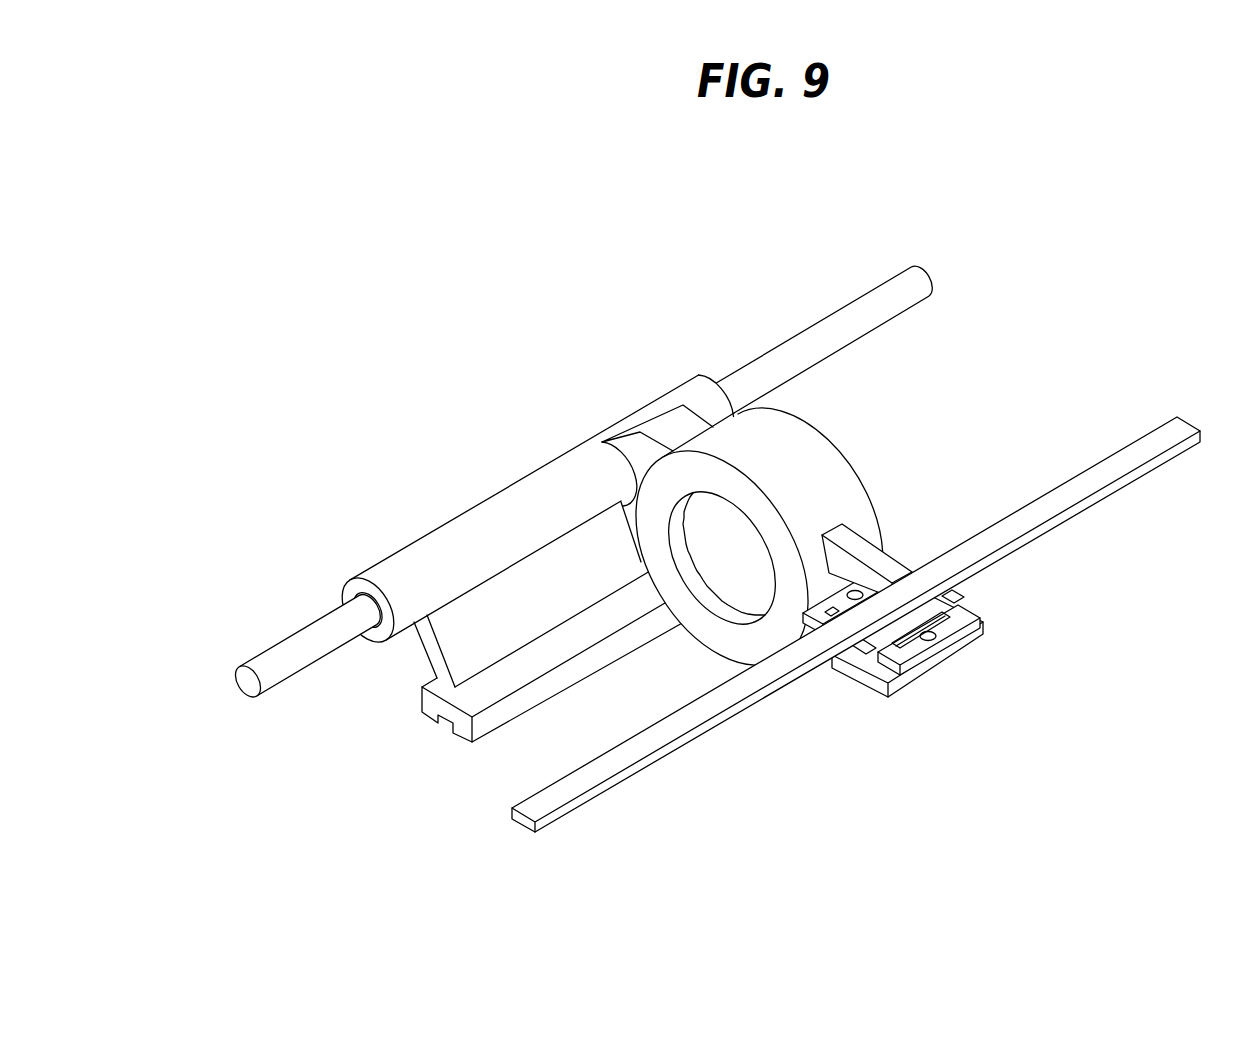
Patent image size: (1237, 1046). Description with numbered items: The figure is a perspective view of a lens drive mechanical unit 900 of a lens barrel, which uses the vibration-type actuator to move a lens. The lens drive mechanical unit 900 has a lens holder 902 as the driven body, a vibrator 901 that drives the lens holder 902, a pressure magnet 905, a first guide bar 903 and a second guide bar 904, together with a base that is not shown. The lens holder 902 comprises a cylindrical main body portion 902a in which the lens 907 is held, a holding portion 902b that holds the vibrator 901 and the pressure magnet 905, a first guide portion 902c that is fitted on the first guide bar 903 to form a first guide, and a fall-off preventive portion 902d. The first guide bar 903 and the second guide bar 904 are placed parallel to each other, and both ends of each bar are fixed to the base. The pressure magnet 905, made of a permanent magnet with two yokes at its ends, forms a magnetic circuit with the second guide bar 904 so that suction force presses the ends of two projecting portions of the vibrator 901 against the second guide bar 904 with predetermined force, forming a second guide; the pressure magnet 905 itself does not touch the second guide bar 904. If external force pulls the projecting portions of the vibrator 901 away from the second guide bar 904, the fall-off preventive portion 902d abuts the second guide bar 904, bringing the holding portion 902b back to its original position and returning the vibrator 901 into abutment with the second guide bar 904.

The lens drive mechanical unit 900 is at (437, 296).
The vibrator 901 is at (938, 603).
The lens holder 902 is at (853, 467).
The cylindrical main body portion 902a is at (787, 428).
The holding portion 902b is at (873, 682).
The first guide portion 902c is at (522, 505).
The fall-off preventive portion 902d is at (887, 563).
The first guide bar 903 is at (833, 326).
The second guide bar 904 is at (1099, 471).
The pressure magnet 905 is at (942, 648).
The lens 907 is at (727, 582).